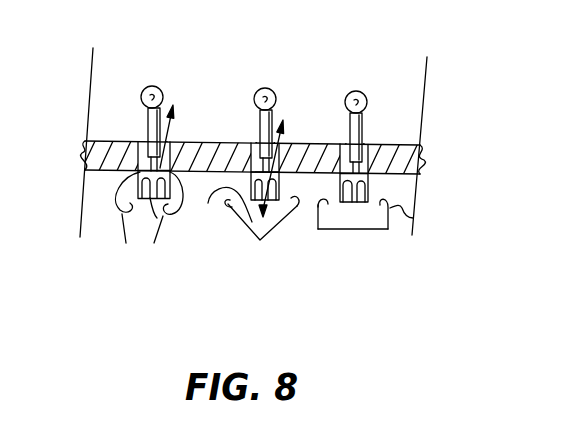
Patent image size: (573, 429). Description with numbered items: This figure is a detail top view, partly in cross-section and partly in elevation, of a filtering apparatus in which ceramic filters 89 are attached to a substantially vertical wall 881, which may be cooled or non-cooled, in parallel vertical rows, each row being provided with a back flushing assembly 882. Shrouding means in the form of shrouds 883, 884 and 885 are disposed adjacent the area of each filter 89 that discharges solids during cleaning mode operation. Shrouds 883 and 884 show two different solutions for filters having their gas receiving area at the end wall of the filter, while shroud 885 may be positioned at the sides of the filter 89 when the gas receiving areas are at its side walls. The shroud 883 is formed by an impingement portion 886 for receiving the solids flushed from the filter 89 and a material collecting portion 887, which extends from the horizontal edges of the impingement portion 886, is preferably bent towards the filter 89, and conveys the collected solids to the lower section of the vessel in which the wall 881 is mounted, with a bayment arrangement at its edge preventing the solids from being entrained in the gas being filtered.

The filter 89 is at (128, 183).
The vertical wall 881 is at (412, 148).
The back flushing assembly 882 is at (349, 93).
The shroud 883 is at (319, 229).
The shroud 884 is at (241, 221).
The shroud 885 is at (150, 220).
The impingement portion 886 is at (358, 230).
The material collecting portion 887 is at (412, 235).